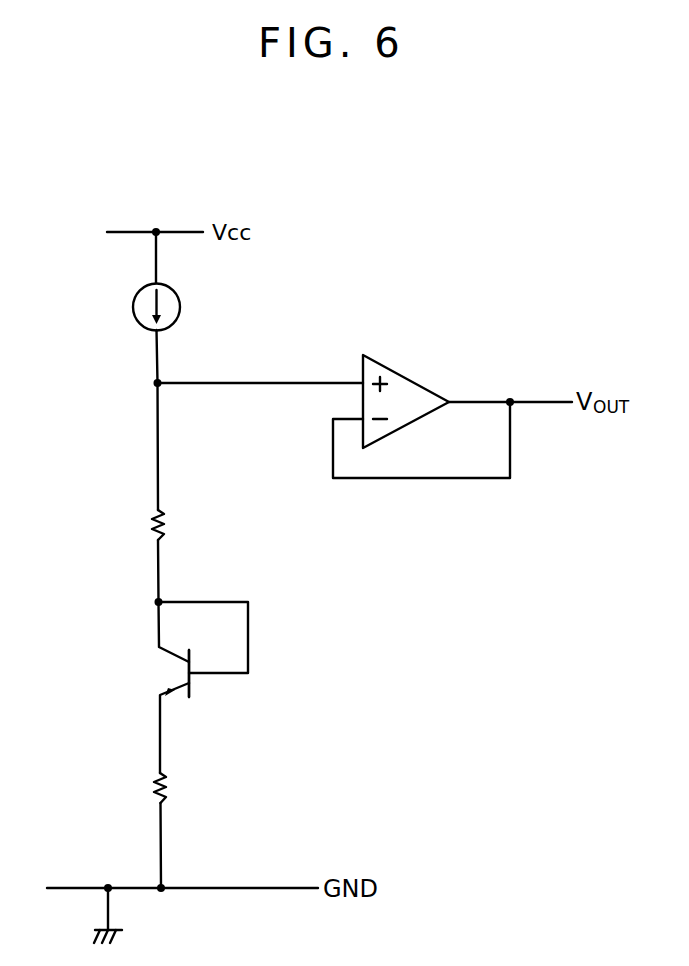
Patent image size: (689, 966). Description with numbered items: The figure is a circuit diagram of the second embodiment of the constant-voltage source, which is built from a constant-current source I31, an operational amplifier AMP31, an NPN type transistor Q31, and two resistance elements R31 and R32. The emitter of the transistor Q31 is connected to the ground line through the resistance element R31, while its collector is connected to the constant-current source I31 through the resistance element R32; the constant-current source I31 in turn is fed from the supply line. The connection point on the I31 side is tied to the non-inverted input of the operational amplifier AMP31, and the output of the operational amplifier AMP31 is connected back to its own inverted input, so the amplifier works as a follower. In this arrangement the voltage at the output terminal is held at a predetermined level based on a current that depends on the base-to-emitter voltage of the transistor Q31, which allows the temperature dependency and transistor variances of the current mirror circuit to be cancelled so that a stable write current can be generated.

The constant-current source I31 is at (133, 307).
The operational amplifier AMP31 is at (410, 377).
The resistance element R32 is at (150, 523).
The NPN type transistor Q31 is at (165, 672).
The resistance element R31 is at (155, 793).